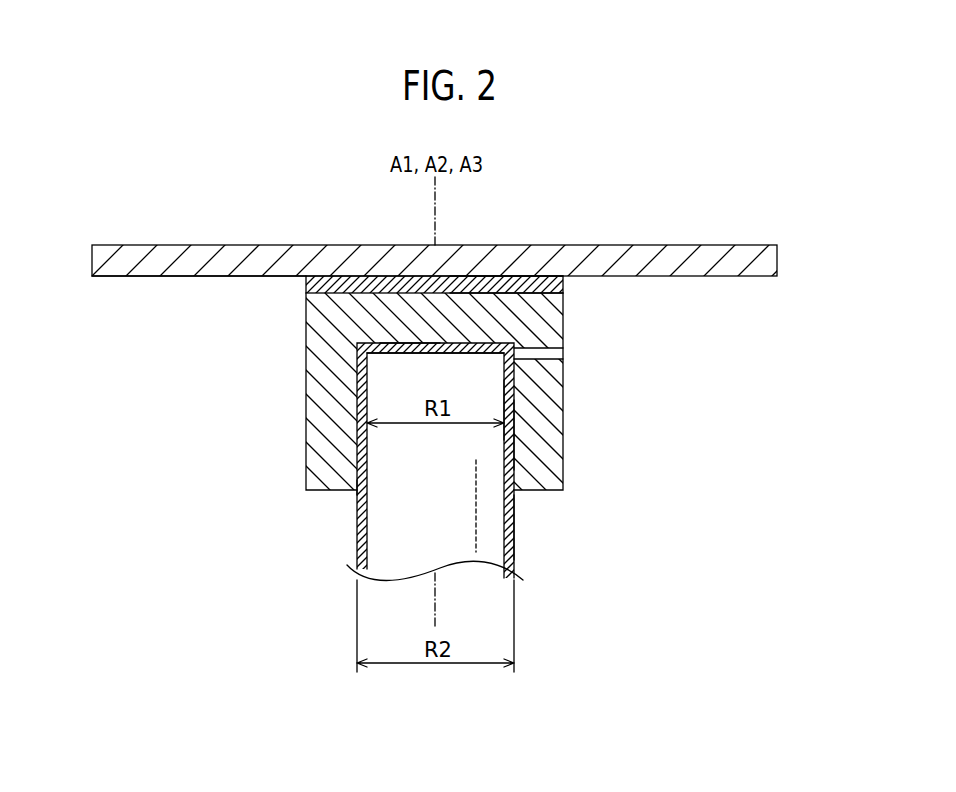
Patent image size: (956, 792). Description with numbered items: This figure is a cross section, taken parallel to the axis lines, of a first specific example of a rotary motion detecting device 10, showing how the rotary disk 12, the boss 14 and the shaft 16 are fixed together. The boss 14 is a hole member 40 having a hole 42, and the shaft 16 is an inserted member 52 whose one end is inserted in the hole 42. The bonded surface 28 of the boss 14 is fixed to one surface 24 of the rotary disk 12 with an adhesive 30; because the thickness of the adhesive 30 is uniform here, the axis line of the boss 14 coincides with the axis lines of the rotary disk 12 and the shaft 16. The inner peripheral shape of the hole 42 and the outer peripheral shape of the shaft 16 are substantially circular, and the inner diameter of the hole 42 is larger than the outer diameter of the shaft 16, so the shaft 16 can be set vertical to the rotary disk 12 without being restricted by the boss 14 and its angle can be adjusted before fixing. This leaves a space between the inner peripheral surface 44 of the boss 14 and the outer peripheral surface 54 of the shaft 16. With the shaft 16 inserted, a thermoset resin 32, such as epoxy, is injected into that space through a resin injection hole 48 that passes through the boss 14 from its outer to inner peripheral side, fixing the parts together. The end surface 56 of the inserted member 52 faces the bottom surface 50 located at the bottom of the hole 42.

The rotary motion detecting device 10 is at (199, 155).
The rotary disk 12 is at (661, 262).
The boss 14 is at (333, 339).
The shaft 16 is at (355, 546).
The one surface 24 is at (165, 278).
The bonded surface 28 is at (353, 290).
The adhesive 30 is at (548, 290).
The thermoset resin 32 is at (506, 412).
The hole member 40 is at (435, 391).
The hole 42 is at (356, 500).
The inner peripheral surface 44 is at (497, 437).
The resin injection hole 48 is at (557, 352).
The bottom surface 50 is at (428, 350).
The inserted member 52 is at (431, 460).
The outer peripheral surface 54 is at (506, 528).
The end surface 56 is at (408, 343).